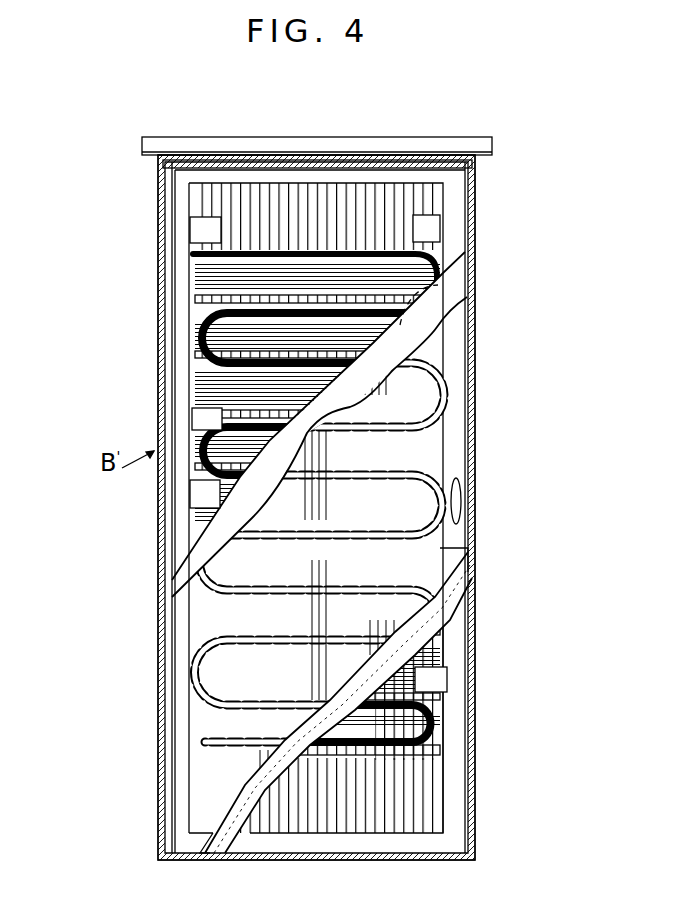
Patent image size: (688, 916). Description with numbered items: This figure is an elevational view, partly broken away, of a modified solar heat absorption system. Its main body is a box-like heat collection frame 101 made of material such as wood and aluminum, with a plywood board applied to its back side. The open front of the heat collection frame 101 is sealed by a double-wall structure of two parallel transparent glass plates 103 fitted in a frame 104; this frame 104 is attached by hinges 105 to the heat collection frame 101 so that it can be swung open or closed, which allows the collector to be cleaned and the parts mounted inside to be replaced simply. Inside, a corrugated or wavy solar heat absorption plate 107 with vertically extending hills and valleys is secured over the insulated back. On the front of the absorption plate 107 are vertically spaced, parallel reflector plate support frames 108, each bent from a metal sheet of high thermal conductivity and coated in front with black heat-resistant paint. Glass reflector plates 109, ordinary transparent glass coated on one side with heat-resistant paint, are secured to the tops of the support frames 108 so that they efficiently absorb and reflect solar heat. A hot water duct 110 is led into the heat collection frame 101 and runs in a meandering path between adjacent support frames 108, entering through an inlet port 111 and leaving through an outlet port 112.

The heat collection frame 101 is at (158, 630).
The transparent glass plates 103 is at (432, 560).
The frame 104 is at (178, 716).
The hinges 105 is at (170, 515).
The solar heat absorption plate 107 is at (428, 800).
The reflector plate support frames 108 is at (455, 298).
The glass reflector plate 109 is at (332, 272).
The hot water duct 110 is at (197, 340).
The inlet port 111 is at (192, 420).
The outlet port 112 is at (196, 233).